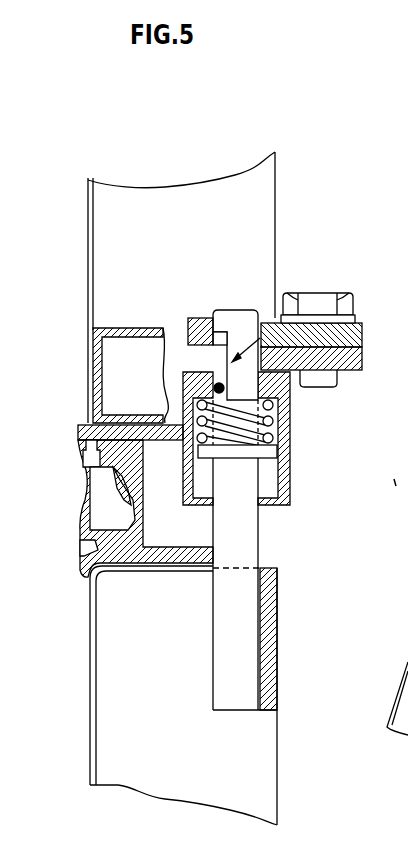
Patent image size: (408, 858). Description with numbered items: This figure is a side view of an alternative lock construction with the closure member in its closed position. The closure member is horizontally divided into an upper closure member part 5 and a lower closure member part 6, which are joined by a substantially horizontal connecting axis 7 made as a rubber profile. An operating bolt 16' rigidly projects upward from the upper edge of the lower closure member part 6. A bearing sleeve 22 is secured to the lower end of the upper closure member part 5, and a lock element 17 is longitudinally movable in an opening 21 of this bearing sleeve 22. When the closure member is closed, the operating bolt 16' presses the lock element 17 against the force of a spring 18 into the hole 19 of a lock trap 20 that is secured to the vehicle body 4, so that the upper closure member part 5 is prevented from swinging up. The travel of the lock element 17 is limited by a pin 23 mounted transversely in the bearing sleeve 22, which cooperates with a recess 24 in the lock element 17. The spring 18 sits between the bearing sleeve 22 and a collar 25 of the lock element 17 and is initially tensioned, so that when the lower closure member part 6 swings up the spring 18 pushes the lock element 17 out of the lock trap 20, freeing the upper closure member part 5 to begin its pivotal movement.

The vehicle body 4 is at (340, 340).
The upper closure member part 5 is at (185, 229).
The lower closure member part 6 is at (180, 699).
The connecting axis 7 is at (66, 488).
The operating bolt 16' is at (302, 555).
The lock element 17 is at (237, 326).
The spring 18 is at (272, 424).
The hole 19 is at (220, 341).
The lock trap 20 is at (192, 326).
The opening 21 is at (268, 389).
The bearing sleeve 22 is at (205, 452).
The pin 23 is at (214, 385).
The recess 24 is at (279, 320).
The collar 25 is at (92, 420).